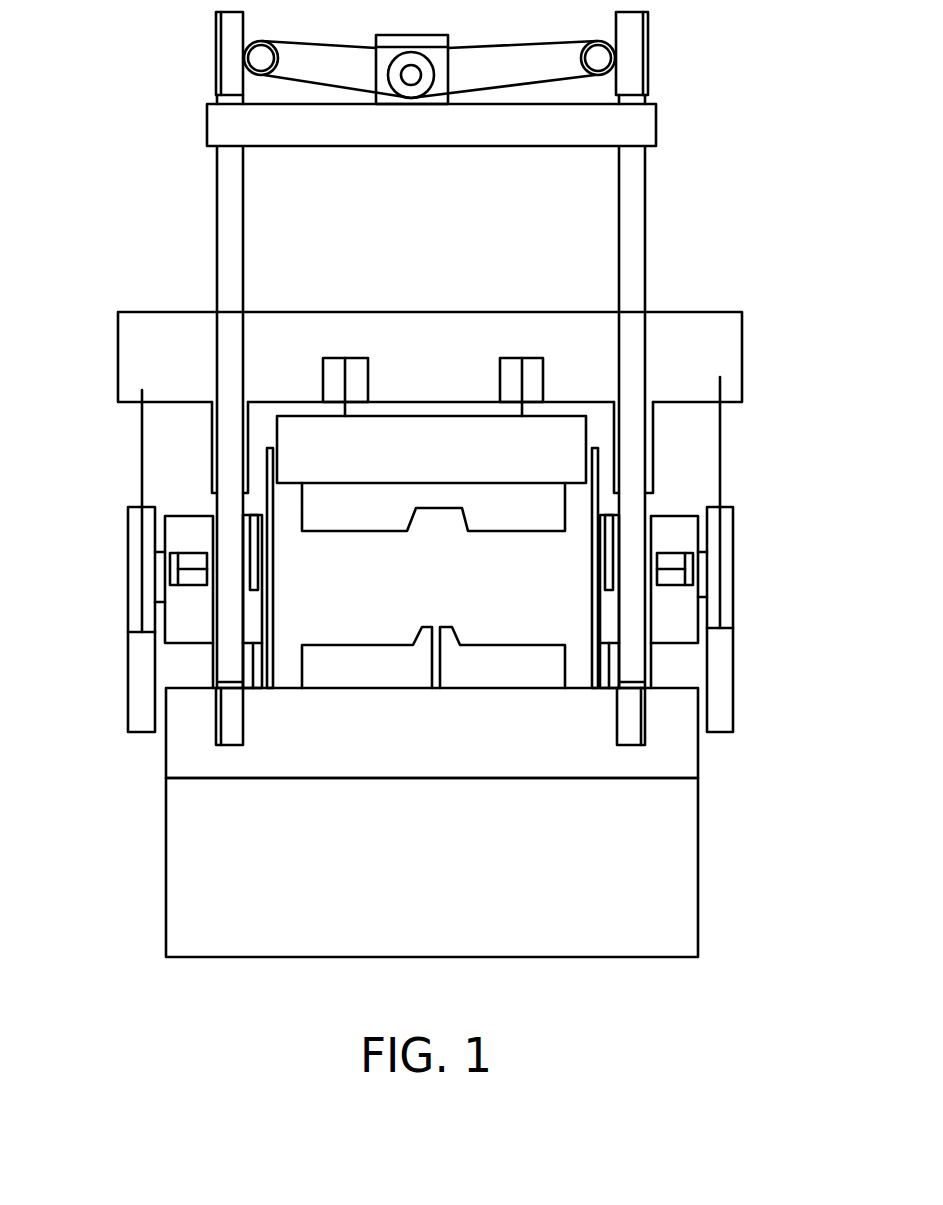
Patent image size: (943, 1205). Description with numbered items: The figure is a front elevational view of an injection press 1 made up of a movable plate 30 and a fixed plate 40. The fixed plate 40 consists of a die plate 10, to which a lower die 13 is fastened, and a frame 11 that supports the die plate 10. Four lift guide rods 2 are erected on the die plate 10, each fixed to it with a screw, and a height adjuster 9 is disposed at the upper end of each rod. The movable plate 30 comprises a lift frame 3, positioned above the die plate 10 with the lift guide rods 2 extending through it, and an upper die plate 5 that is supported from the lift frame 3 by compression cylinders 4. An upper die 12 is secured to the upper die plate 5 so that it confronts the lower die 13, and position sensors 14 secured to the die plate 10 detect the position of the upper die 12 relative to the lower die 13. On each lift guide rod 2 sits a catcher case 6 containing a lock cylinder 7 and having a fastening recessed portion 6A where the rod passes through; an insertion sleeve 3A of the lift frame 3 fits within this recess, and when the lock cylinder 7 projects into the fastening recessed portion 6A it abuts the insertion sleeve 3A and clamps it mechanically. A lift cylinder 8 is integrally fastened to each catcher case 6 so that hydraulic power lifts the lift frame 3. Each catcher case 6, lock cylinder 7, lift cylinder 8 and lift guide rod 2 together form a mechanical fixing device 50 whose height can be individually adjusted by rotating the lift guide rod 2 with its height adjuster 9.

The injection press 1 is at (647, 193).
The lift guide rod 2 is at (633, 372).
The lift frame 3 is at (128, 320).
The insertion sleeve 3A is at (655, 437).
The compression cylinder 4 is at (543, 360).
The upper die plate 5 is at (280, 428).
The catcher case 6 is at (682, 620).
The fastening recessed portion 6A is at (645, 522).
The lock cylinder 7 is at (668, 551).
The lift cylinder 8 is at (735, 552).
The height adjuster 9 is at (633, 64).
The die plate 10 is at (177, 752).
The frame 11 is at (180, 845).
The upper die 12 is at (370, 533).
The lower die 13 is at (497, 645).
The position sensor 14 is at (222, 503).
The movable plate 30 is at (66, 245).
The fixed plate 40 is at (96, 750).
The mechanical fixing device 50 is at (787, 317).